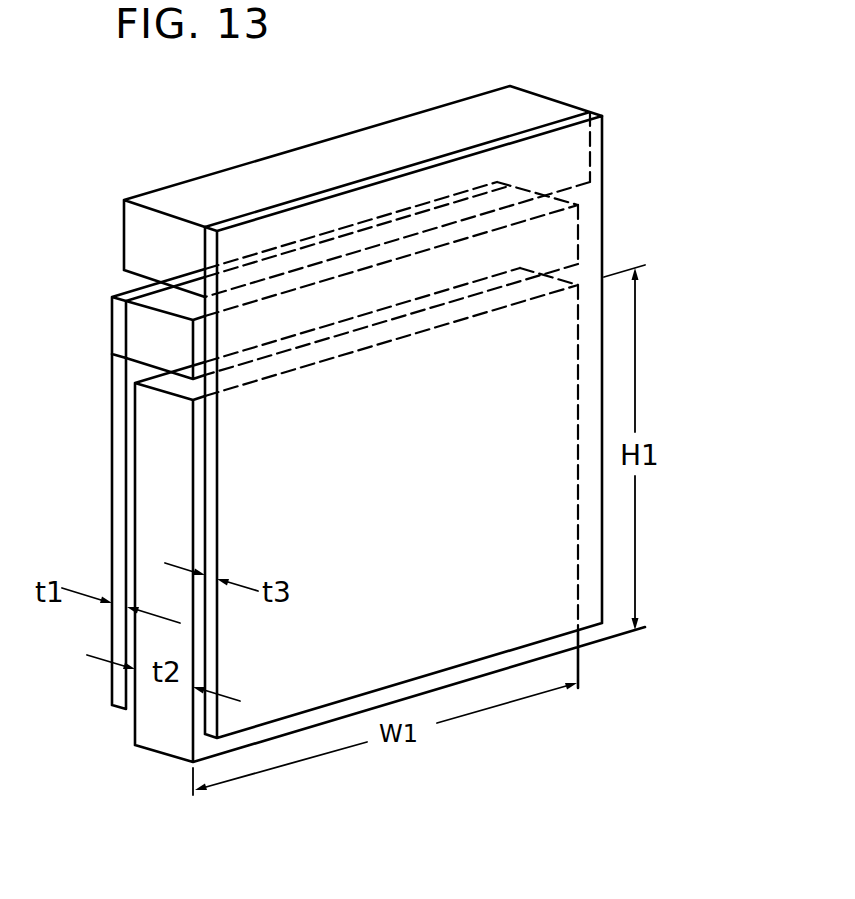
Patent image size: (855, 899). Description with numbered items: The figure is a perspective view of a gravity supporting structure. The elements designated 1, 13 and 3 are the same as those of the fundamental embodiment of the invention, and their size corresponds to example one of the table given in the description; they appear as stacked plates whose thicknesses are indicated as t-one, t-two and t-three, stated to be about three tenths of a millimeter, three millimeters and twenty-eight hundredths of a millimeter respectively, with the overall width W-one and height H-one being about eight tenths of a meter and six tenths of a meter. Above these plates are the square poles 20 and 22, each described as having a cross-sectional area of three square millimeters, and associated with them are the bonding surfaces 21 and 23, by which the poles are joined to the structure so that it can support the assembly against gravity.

The element 1 is at (112, 689).
The element 3 is at (262, 713).
The element 13 is at (167, 740).
The square pole 20 is at (141, 347).
The bonding surface 21 is at (125, 322).
The square pole 22 is at (130, 219).
The bonding surface 23 is at (197, 244).